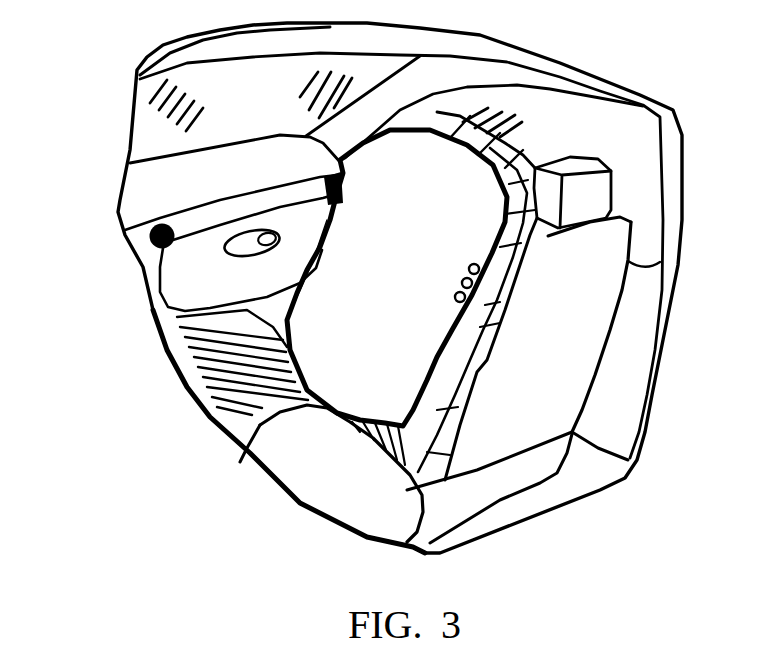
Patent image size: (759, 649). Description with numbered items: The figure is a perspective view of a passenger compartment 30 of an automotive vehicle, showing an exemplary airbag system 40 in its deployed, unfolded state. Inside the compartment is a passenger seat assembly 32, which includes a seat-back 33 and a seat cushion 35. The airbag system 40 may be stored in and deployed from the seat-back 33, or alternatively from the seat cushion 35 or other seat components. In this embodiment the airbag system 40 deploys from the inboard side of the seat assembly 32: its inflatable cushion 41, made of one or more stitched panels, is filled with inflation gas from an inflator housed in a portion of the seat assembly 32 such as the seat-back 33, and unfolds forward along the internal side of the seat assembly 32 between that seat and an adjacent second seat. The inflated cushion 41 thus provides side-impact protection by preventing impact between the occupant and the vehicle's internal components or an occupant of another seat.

The passenger compartment 30 is at (142, 358).
The seat assembly 32 is at (565, 466).
The seat-back 33 is at (560, 373).
The seat cushion 35 is at (353, 505).
The airbag system 40 is at (488, 283).
The inflatable cushion 41 is at (350, 337).